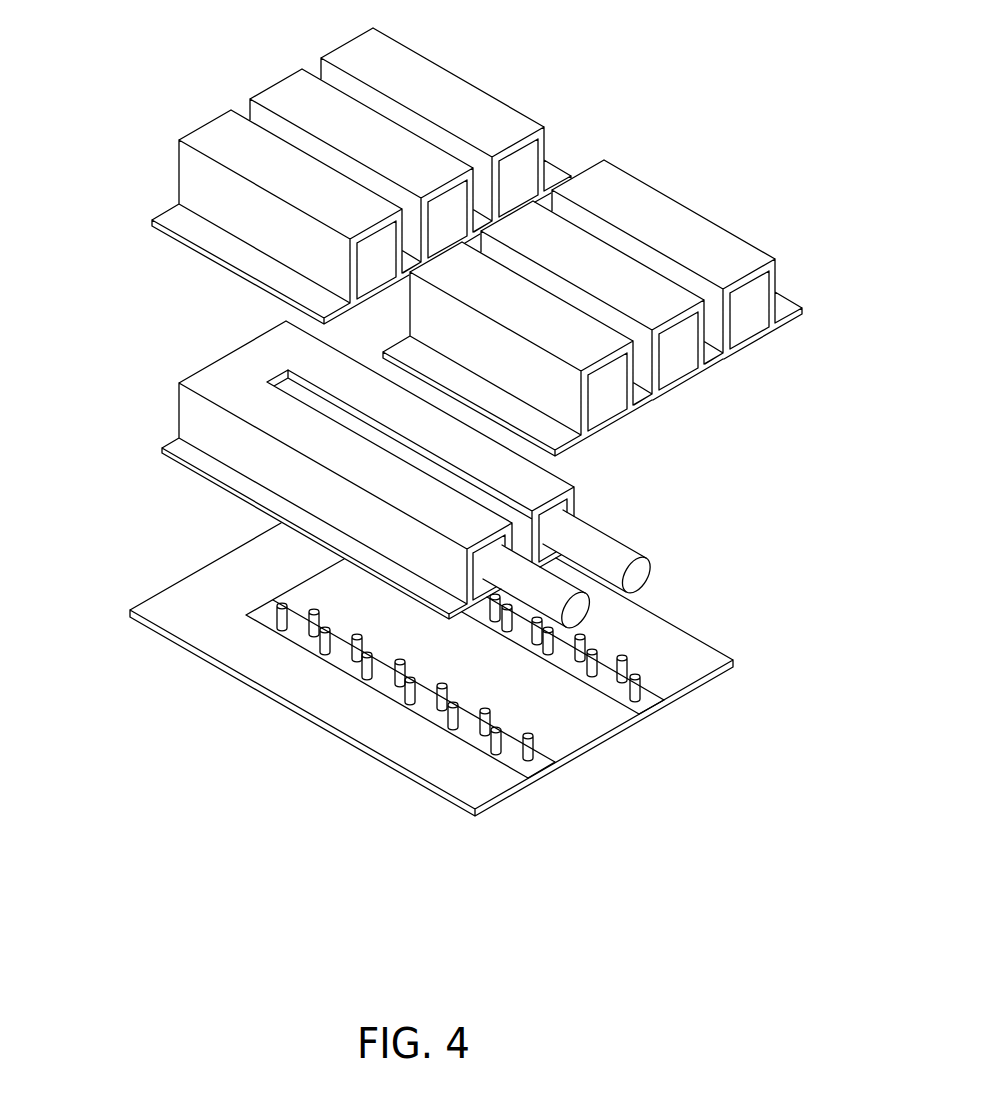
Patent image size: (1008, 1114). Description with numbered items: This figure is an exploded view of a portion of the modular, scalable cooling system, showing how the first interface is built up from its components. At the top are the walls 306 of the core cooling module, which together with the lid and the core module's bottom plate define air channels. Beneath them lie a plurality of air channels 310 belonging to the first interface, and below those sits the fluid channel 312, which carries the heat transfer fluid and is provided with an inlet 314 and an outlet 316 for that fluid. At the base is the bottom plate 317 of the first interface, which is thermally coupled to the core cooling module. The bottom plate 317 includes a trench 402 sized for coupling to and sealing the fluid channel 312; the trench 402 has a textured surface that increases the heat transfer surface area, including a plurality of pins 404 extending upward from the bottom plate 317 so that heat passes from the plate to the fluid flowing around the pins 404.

The walls 306 is at (200, 178).
The air channels 310 is at (562, 393).
The fluid channel 312 is at (218, 383).
The inlet 314 is at (572, 609).
The outlet 316 is at (640, 578).
The bottom plate 317 is at (473, 777).
The trench 402 is at (537, 765).
The pins 404 is at (323, 643).